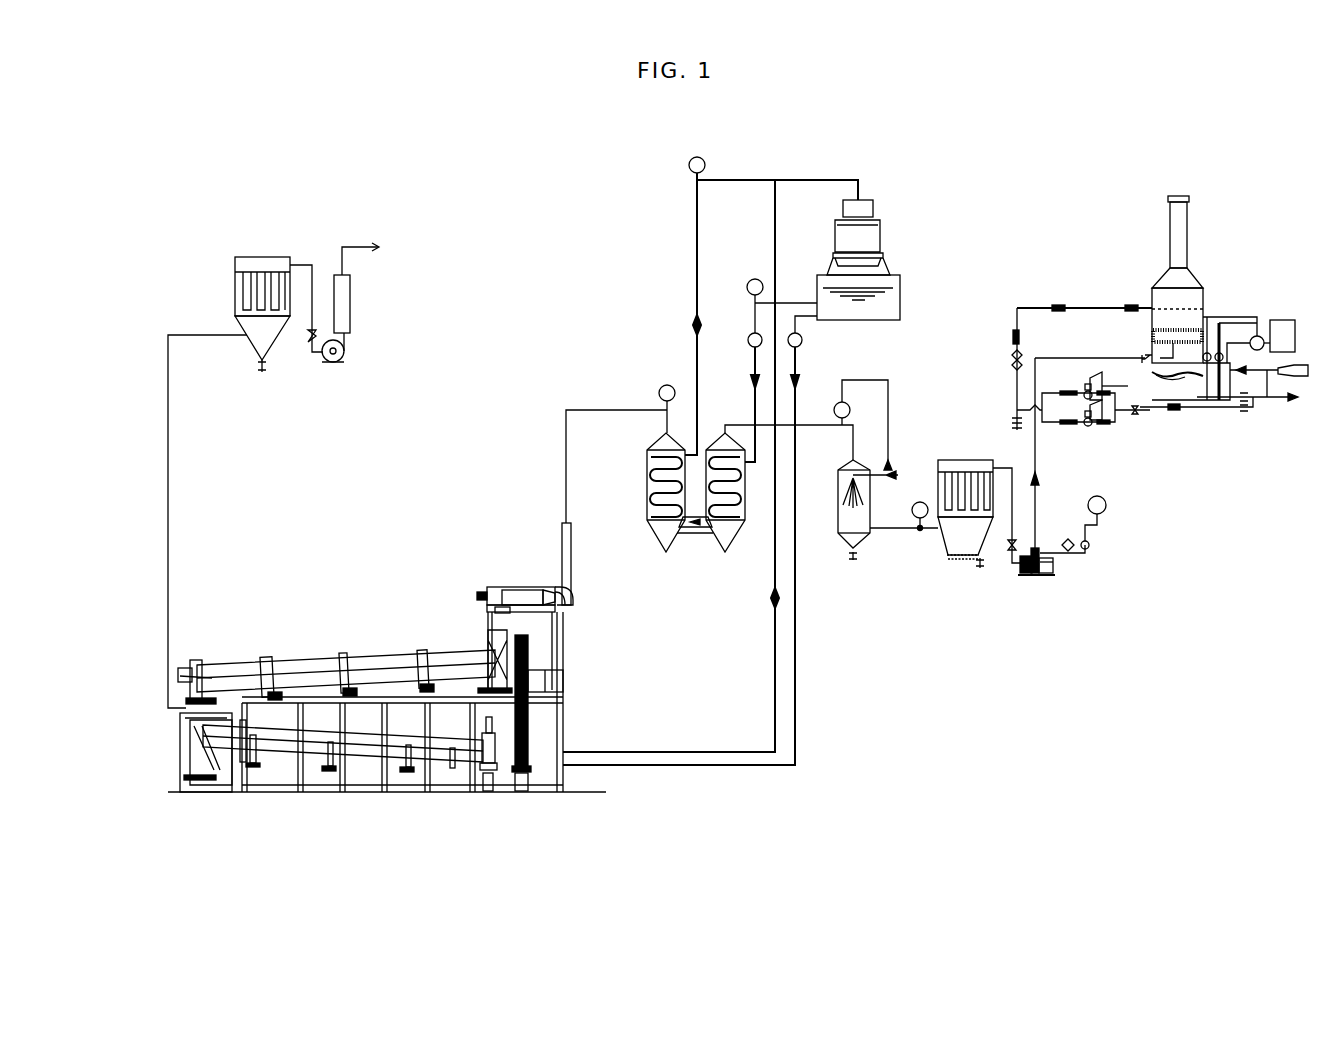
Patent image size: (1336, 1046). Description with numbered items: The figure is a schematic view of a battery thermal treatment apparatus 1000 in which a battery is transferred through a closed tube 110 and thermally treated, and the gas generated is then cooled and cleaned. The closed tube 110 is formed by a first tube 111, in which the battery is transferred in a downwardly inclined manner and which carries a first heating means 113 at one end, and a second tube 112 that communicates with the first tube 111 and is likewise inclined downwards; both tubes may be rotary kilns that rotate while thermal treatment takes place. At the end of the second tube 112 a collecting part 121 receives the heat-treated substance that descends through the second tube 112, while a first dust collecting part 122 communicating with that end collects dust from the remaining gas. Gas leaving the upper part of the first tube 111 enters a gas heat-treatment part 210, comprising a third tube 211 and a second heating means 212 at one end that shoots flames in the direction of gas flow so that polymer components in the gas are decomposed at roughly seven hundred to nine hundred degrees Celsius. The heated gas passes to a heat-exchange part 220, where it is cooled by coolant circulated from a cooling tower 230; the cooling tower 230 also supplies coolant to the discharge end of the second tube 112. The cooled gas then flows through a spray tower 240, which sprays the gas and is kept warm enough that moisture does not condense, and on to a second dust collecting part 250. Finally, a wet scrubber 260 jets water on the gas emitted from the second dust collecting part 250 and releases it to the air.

The battery thermal treatment apparatus 1000 is at (225, 164).
The closed tube 110 is at (355, 650).
The first tube 111 is at (300, 673).
The second tube 112 is at (357, 748).
The first heating means 113 is at (190, 675).
The collecting part 121 is at (495, 757).
The first dust collecting part 122 is at (232, 285).
The gas heat-treatment part 210 is at (532, 580).
The third tube 211 is at (515, 595).
The second heating means 212 is at (478, 593).
The heat-exchange part 220 is at (692, 535).
The cooling tower 230 is at (900, 237).
The spray tower 240 is at (863, 545).
The second dust collecting part 250 is at (987, 543).
The wet scrubber 260 is at (1208, 415).